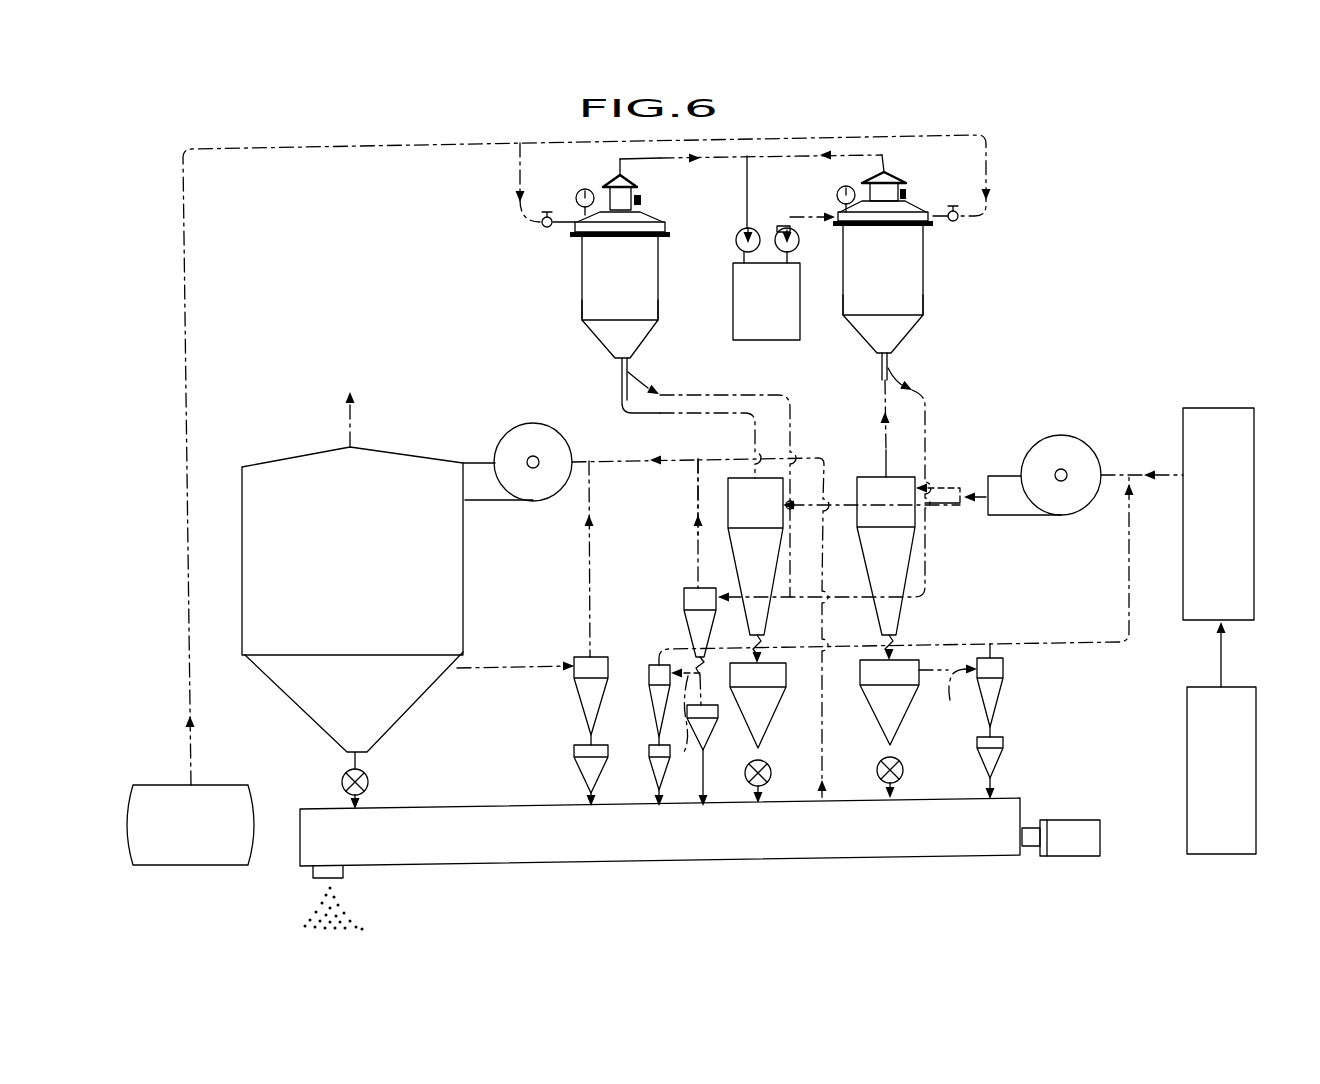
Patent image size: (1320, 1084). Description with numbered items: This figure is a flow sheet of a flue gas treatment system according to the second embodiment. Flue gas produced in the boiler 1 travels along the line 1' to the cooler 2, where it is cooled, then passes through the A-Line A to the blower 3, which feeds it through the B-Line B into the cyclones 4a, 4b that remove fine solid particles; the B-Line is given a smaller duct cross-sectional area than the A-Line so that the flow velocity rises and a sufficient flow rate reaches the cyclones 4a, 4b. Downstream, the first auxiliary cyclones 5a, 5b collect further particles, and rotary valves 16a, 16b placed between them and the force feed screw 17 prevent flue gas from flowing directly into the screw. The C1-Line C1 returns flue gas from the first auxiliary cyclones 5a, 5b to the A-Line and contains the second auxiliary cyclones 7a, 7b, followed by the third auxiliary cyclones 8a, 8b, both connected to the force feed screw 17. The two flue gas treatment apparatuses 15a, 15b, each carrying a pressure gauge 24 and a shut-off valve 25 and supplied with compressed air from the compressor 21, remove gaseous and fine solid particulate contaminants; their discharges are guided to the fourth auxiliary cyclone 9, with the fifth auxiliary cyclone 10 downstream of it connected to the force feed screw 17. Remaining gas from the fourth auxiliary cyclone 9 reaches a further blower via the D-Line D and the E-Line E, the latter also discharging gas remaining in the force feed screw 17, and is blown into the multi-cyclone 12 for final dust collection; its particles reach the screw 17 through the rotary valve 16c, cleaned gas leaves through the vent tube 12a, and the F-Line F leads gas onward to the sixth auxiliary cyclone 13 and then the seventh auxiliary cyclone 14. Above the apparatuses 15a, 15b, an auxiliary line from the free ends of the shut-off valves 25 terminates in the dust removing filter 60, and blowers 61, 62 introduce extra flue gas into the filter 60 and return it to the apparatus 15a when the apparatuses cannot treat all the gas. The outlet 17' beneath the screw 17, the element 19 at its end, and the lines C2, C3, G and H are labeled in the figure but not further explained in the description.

The boiler 1 is at (1221, 770).
The raw material feed path 1' is at (1186, 668).
The cooler 2 is at (1227, 528).
The blower 3 is at (1073, 447).
The cyclone 4a is at (900, 557).
The cyclone 4b is at (771, 558).
The first auxiliary cyclone 5a is at (903, 711).
The first auxiliary cyclone 5b is at (771, 713).
The second auxiliary cyclone 7a is at (1000, 690).
The second auxiliary cyclone 7b is at (656, 690).
The third auxiliary cyclone 8a is at (1000, 765).
The third auxiliary cyclone 8b is at (655, 765).
The fourth auxiliary cyclone 9 is at (684, 602).
The fifth auxiliary cyclone 10 is at (708, 727).
The multi-cyclone 12 is at (366, 574).
The vent tube 12a is at (358, 430).
The sixth auxiliary cyclone 13 is at (581, 698).
The seventh auxiliary cyclone 14 is at (584, 772).
The flue gas treatment apparatus 15a is at (906, 277).
The flue gas treatment apparatus 15b is at (642, 285).
The rotary valve 16a is at (905, 770).
The rotary valve 16b is at (771, 766).
The rotary valve 16c is at (368, 780).
The force feed screw 17 is at (660, 863).
The conveyor discharge outlet 17' is at (357, 898).
The conveyor drive motor 19 is at (1100, 838).
The compressor 21 is at (204, 840).
The pressure gauge 24 is at (838, 197).
The shut-off valve 25 is at (642, 200).
The dust removing filter 60 is at (781, 308).
The blower 61 is at (735, 237).
The blower 62 is at (799, 237).
The A-Line A is at (1163, 462).
The B-Line B is at (981, 495).
The C1-Line C1 is at (1080, 640).
The flow path C2 is at (945, 716).
The flow path C3 is at (695, 780).
The D-Line D is at (690, 509).
The E-Line E is at (601, 452).
The F-Line F is at (514, 660).
The flow path G is at (584, 567).
The flow path H is at (183, 403).